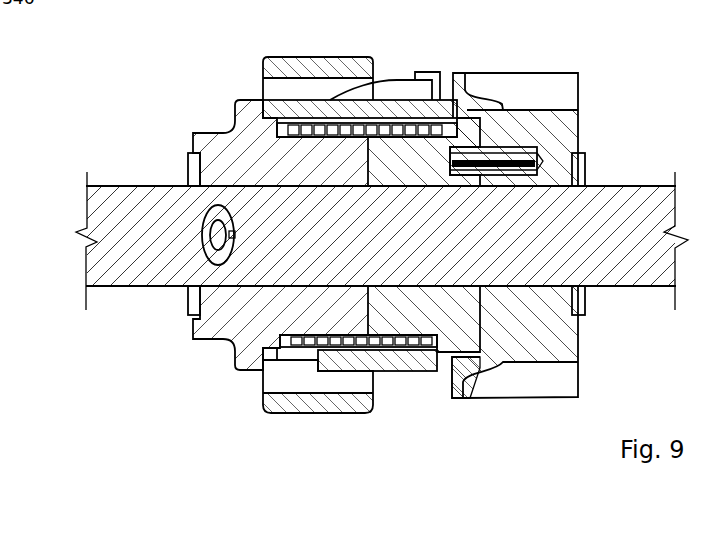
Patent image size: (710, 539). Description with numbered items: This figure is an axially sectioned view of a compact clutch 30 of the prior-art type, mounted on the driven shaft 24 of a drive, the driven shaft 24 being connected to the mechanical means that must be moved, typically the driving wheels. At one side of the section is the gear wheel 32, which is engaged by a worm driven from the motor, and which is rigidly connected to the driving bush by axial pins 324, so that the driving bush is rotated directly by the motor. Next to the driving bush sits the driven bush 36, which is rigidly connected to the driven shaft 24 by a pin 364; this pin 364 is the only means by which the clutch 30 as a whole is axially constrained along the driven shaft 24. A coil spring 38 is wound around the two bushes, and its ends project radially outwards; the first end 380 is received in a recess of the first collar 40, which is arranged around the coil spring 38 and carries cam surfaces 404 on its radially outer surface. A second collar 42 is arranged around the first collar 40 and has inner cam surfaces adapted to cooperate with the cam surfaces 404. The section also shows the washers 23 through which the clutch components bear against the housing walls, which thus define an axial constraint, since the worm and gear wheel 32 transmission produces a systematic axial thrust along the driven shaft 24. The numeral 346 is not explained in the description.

The washers 23 is at (192, 302).
The driven shaft 24 is at (638, 196).
The clutch 30 is at (383, 229).
The gear wheel 32 is at (535, 385).
The driven bush 36 is at (229, 328).
The coil spring 38 is at (337, 350).
The first collar 40 is at (418, 366).
The second collar 42 is at (287, 68).
The axial pins 324 is at (517, 160).
The retainer 346 is at (270, 348).
The pin 364 is at (218, 233).
The first end 380 is at (422, 72).
The cam surfaces 404 is at (397, 78).